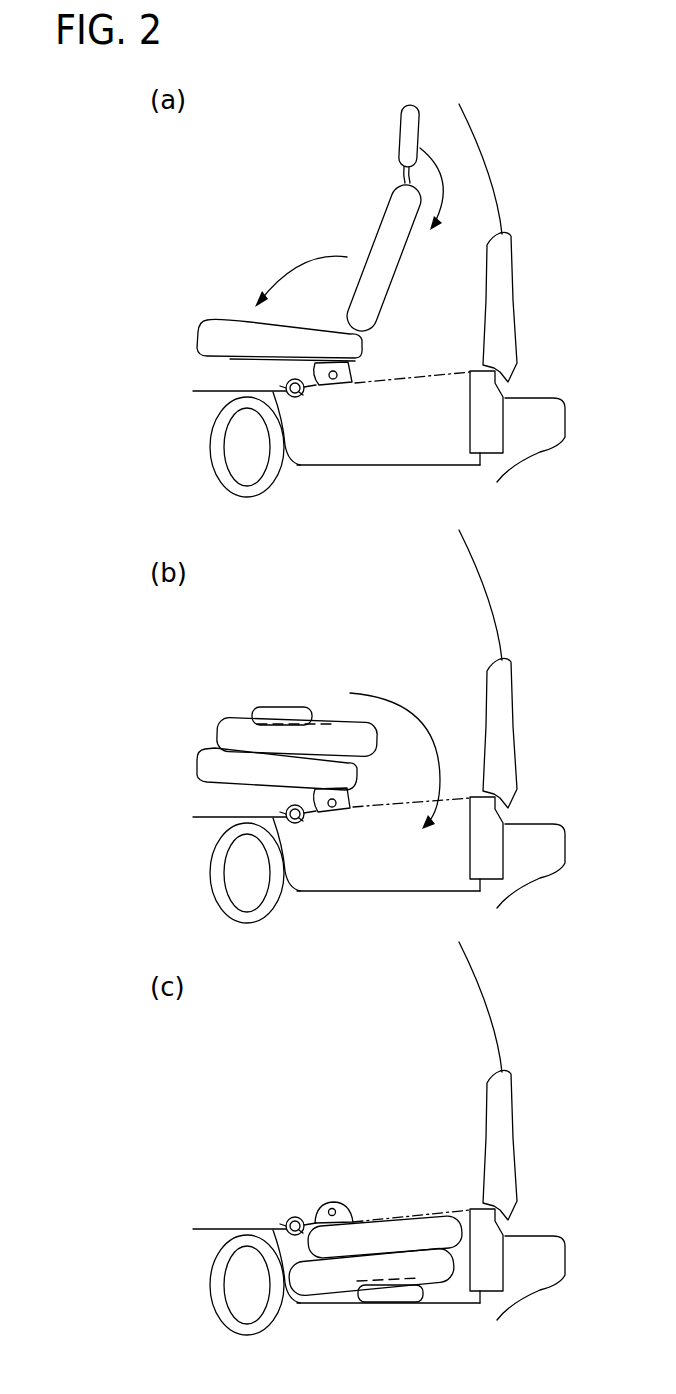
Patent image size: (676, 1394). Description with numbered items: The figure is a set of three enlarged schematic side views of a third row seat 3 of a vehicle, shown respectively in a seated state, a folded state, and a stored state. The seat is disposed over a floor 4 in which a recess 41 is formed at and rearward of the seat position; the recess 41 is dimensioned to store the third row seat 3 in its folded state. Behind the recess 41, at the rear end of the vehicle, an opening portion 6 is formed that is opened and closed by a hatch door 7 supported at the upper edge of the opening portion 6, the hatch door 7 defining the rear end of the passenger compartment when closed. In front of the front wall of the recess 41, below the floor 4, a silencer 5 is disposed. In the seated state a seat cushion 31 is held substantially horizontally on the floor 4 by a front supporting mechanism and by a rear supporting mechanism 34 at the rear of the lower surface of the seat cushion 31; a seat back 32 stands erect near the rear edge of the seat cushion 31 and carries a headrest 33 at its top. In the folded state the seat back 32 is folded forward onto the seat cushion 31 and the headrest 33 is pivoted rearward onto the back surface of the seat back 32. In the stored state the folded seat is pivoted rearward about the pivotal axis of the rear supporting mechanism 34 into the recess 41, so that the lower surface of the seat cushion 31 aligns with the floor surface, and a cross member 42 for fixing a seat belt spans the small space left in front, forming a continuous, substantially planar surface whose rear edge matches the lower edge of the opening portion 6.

The third row seat 3 is at (309, 233).
The seat cushion 31 is at (245, 332).
The seat back 32 is at (376, 240).
The headrest 33 is at (395, 148).
The rear supporting mechanism 34 is at (360, 366).
The floor 4 is at (200, 391).
The recess 41 is at (352, 458).
The cross member 42 is at (305, 395).
The silencer 5 is at (273, 470).
The opening portion 6 is at (488, 234).
The hatch door 7 is at (512, 313).